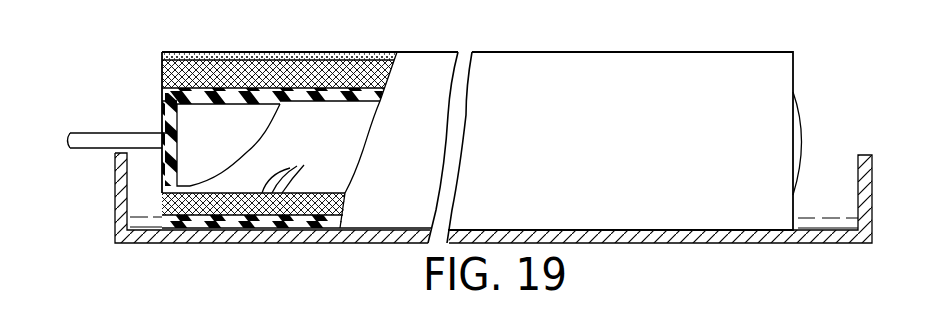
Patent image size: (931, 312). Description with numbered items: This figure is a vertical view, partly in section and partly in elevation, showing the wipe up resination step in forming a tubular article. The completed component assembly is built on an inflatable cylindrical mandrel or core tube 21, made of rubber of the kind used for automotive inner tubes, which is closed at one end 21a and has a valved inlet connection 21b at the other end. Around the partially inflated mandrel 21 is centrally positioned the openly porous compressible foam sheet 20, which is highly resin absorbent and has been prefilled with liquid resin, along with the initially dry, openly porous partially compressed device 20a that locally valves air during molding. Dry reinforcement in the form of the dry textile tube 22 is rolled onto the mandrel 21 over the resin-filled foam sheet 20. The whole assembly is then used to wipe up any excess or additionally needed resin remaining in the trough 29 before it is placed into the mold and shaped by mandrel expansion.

The openly porous compressible foam sheet 20 is at (464, 146).
The openly porous partially compressed device 20a is at (320, 53).
The inflatable cylindrical mandrel or core tube 21 is at (218, 104).
The closed end of core tube 21a is at (804, 118).
The valved inlet connection 21b is at (84, 150).
The dry textile tube 22 is at (285, 173).
The trough 29 is at (140, 233).